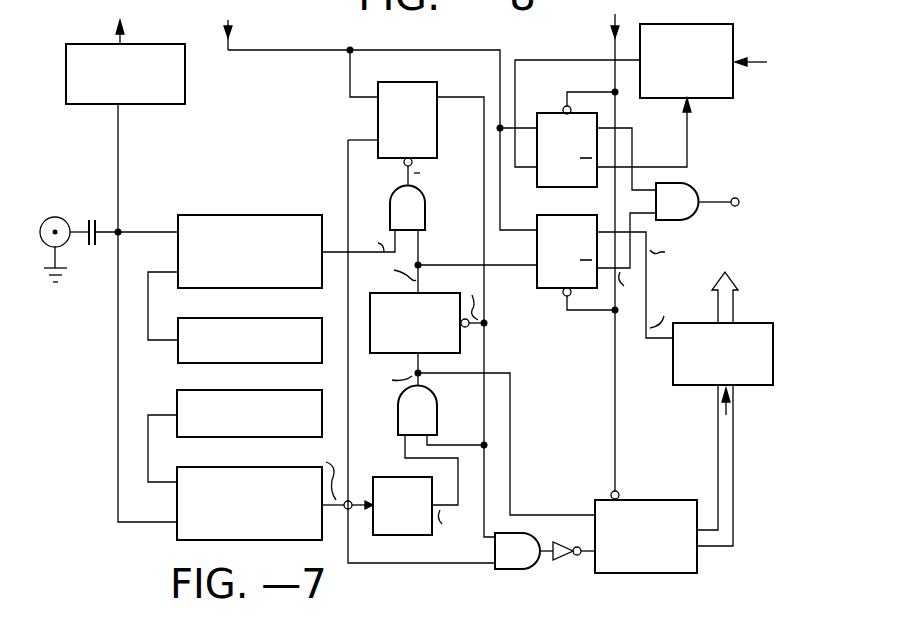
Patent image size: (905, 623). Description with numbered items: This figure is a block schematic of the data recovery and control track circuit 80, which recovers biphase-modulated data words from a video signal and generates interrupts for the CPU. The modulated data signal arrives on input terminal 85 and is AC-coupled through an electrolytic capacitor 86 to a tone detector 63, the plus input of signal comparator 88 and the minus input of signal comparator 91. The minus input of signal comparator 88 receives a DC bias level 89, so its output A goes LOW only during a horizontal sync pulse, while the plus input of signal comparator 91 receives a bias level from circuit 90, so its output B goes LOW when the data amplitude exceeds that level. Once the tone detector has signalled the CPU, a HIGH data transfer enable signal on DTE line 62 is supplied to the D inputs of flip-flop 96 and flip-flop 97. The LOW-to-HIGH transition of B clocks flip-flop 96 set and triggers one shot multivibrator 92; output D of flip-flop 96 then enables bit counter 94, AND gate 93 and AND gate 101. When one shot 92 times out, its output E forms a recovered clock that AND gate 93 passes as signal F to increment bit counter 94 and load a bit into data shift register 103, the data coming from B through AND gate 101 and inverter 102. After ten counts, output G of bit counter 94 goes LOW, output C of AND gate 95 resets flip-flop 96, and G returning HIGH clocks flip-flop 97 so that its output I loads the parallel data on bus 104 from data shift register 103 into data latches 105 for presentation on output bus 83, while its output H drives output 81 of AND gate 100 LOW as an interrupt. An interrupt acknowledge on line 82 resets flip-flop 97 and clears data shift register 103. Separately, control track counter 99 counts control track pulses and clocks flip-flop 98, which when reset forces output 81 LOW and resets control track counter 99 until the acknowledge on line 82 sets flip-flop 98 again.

The DTE line 62 is at (254, 52).
The tone detector 63 is at (122, 40).
The data recovery and control track circuit 80 is at (298, 148).
The output of AND gate 100 81 is at (728, 207).
The interrupt acknowledge line 82 is at (612, 52).
The output bus 83 is at (735, 301).
The input terminal 85 is at (65, 222).
The electrolytic capacitor 86 is at (102, 216).
The signal comparator 88 is at (283, 215).
The DC bias level 89 is at (283, 318).
The bias level circuit 90 is at (295, 390).
The signal comparator 91 is at (280, 467).
The one shot multivibrator 92 is at (398, 477).
The AND gate 93 is at (406, 416).
The bit counter 94 is at (392, 305).
The AND gate 95 is at (426, 198).
The flip-flop 96 is at (426, 128).
The flip-flop 97 is at (556, 286).
The flip-flop 98 is at (555, 188).
The control track counter 99 is at (707, 24).
The AND gate 100 is at (690, 185).
The AND gate 101 is at (522, 566).
The inverter 102 is at (570, 569).
The data shift register 103 is at (653, 573).
The bus 104 is at (722, 478).
The data latches 105 is at (698, 386).